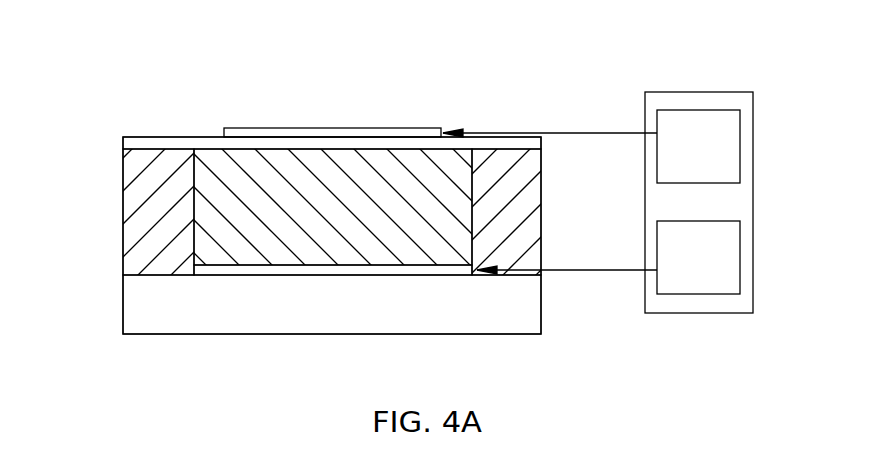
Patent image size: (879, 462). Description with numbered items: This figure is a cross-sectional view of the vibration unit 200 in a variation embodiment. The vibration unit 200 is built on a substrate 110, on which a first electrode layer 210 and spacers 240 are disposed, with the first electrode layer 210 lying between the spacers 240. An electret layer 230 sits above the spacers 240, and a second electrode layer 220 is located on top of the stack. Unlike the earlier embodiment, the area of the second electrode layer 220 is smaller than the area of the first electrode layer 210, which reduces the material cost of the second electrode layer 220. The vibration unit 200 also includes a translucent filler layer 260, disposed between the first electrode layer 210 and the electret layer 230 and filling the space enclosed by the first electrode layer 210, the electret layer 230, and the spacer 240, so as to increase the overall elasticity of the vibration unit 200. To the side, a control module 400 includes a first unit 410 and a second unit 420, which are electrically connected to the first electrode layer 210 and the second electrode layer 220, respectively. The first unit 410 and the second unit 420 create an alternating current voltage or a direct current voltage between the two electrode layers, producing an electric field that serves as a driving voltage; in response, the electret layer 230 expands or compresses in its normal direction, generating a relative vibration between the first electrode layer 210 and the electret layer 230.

The vibration unit 200 is at (173, 33).
The substrate 110 is at (268, 316).
The first electrode layer 210 is at (193, 270).
The second electrode layer 220 is at (240, 132).
The electret layer 230 is at (143, 143).
The spacer 240 is at (131, 221).
The translucent filler layer 260 is at (416, 225).
The control module 400 is at (680, 88).
The first unit 410 is at (680, 271).
The second unit 420 is at (680, 161).